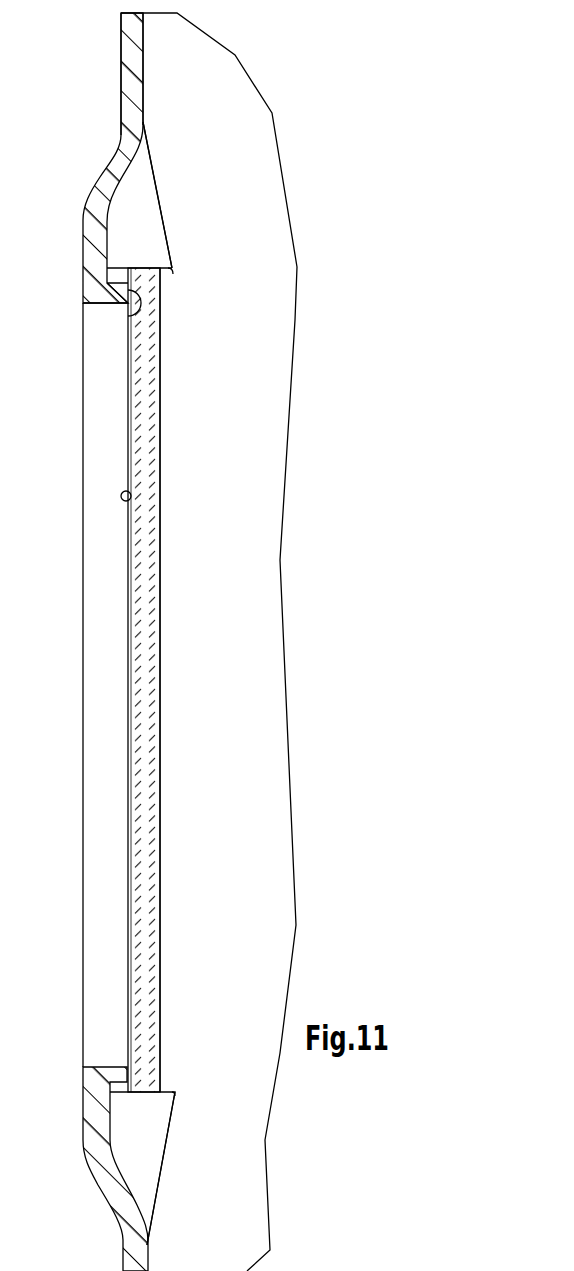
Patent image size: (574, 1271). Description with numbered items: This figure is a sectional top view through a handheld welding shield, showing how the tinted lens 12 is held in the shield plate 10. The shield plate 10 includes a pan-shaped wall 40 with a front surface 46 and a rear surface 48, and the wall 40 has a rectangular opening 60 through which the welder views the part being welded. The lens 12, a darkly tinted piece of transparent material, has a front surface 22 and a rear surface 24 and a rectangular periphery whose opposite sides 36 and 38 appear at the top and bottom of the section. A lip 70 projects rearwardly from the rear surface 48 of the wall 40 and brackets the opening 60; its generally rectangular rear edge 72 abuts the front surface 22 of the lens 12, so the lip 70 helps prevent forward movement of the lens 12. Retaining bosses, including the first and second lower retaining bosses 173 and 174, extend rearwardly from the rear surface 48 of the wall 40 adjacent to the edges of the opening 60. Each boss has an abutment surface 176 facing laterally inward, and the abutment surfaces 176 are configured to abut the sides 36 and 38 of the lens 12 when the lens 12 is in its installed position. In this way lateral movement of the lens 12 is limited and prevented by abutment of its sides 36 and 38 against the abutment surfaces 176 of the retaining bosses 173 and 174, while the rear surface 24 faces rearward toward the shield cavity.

The shield plate 10 is at (296, 85).
The tinted lens 12 is at (176, 377).
The front surface 22 is at (128, 487).
The rear surface 24 is at (160, 448).
The side 36 is at (148, 1093).
The side 38 is at (145, 268).
The wall 40 is at (119, 67).
The front surface 46 is at (120, 103).
The rear surface 48 is at (143, 105).
The rectangular opening 60 is at (78, 538).
The lip 70 is at (128, 312).
The rear edge 72 is at (128, 306).
The first lower retaining boss 173 is at (163, 1170).
The second lower retaining boss 174 is at (160, 198).
The abutment surface 176 is at (172, 270).